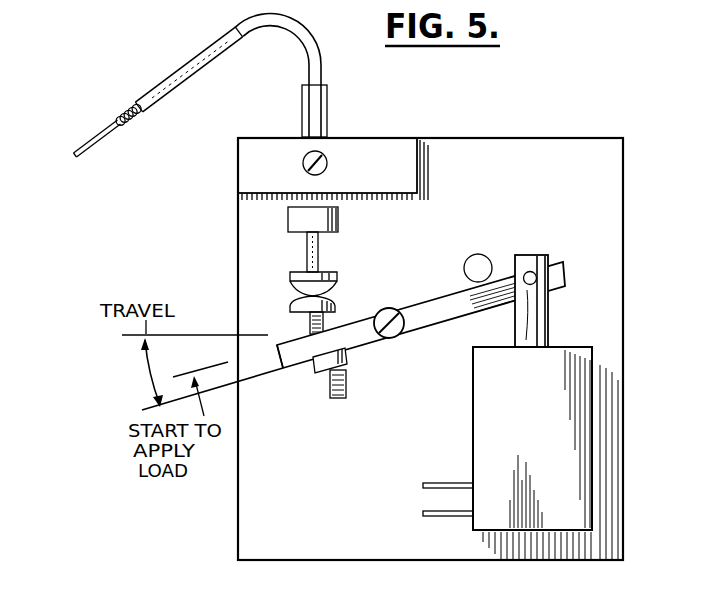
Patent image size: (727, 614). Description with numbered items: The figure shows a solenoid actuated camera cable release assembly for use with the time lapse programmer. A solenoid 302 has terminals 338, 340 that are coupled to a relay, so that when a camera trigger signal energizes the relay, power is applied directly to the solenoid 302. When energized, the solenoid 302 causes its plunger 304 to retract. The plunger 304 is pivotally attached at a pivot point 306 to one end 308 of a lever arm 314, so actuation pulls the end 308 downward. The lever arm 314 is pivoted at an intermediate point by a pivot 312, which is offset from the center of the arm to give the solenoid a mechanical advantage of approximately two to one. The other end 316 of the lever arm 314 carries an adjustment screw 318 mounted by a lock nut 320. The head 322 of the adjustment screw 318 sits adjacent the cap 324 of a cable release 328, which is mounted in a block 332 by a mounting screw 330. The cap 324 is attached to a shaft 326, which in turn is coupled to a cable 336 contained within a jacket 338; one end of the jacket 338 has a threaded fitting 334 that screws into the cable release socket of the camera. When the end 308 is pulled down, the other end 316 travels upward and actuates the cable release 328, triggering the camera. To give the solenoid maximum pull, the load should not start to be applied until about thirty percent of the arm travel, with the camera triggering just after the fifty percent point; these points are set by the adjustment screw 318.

The solenoid 302 is at (552, 437).
The plunger 304 is at (536, 300).
The pivot point 306 is at (535, 268).
The end of lever arm 308 is at (549, 270).
The pivot 312 is at (393, 338).
The lever arm 314 is at (431, 298).
The other end of lever arm 316 is at (290, 360).
The adjustment screw 318 is at (336, 398).
The lock nut 320 is at (347, 360).
The head of adjustment screw 322 is at (292, 309).
The cap 324 is at (291, 278).
The shaft 326 is at (307, 255).
The cable release 328 is at (288, 215).
The mounting screw 330 is at (303, 161).
The block 332 is at (420, 170).
The threaded fitting 334 is at (126, 104).
The cable 336 is at (78, 147).
The jacket 338 is at (177, 66).
The terminal 340 is at (423, 514).